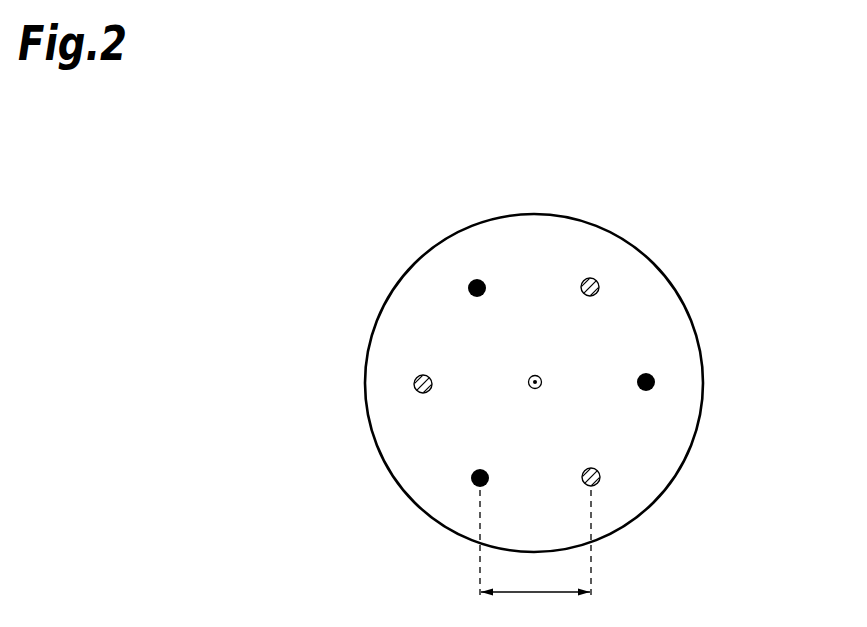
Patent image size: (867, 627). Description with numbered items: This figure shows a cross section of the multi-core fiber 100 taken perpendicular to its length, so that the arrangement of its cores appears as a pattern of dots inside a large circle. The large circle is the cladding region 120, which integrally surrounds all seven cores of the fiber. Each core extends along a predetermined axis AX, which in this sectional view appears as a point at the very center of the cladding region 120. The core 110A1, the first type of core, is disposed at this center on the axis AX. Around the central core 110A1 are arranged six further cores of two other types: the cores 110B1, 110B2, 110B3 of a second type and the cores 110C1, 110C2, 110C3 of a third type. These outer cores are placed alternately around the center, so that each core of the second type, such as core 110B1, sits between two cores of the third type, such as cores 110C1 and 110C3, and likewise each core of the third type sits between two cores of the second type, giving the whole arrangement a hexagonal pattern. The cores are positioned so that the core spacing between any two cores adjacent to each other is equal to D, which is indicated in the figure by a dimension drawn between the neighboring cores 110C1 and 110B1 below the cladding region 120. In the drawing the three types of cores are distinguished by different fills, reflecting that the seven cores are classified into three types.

The multi-core fiber 100 is at (321, 161).
The cladding region 120 is at (543, 235).
The core 110A1 is at (542, 381).
The core 110B1 is at (600, 483).
The core 110B2 is at (414, 384).
The core 110B3 is at (599, 285).
The core 110C1 is at (471, 483).
The core 110C2 is at (468, 287).
The core 110C3 is at (655, 382).
The predetermined axis AX is at (532, 375).
The core spacing D is at (535, 544).